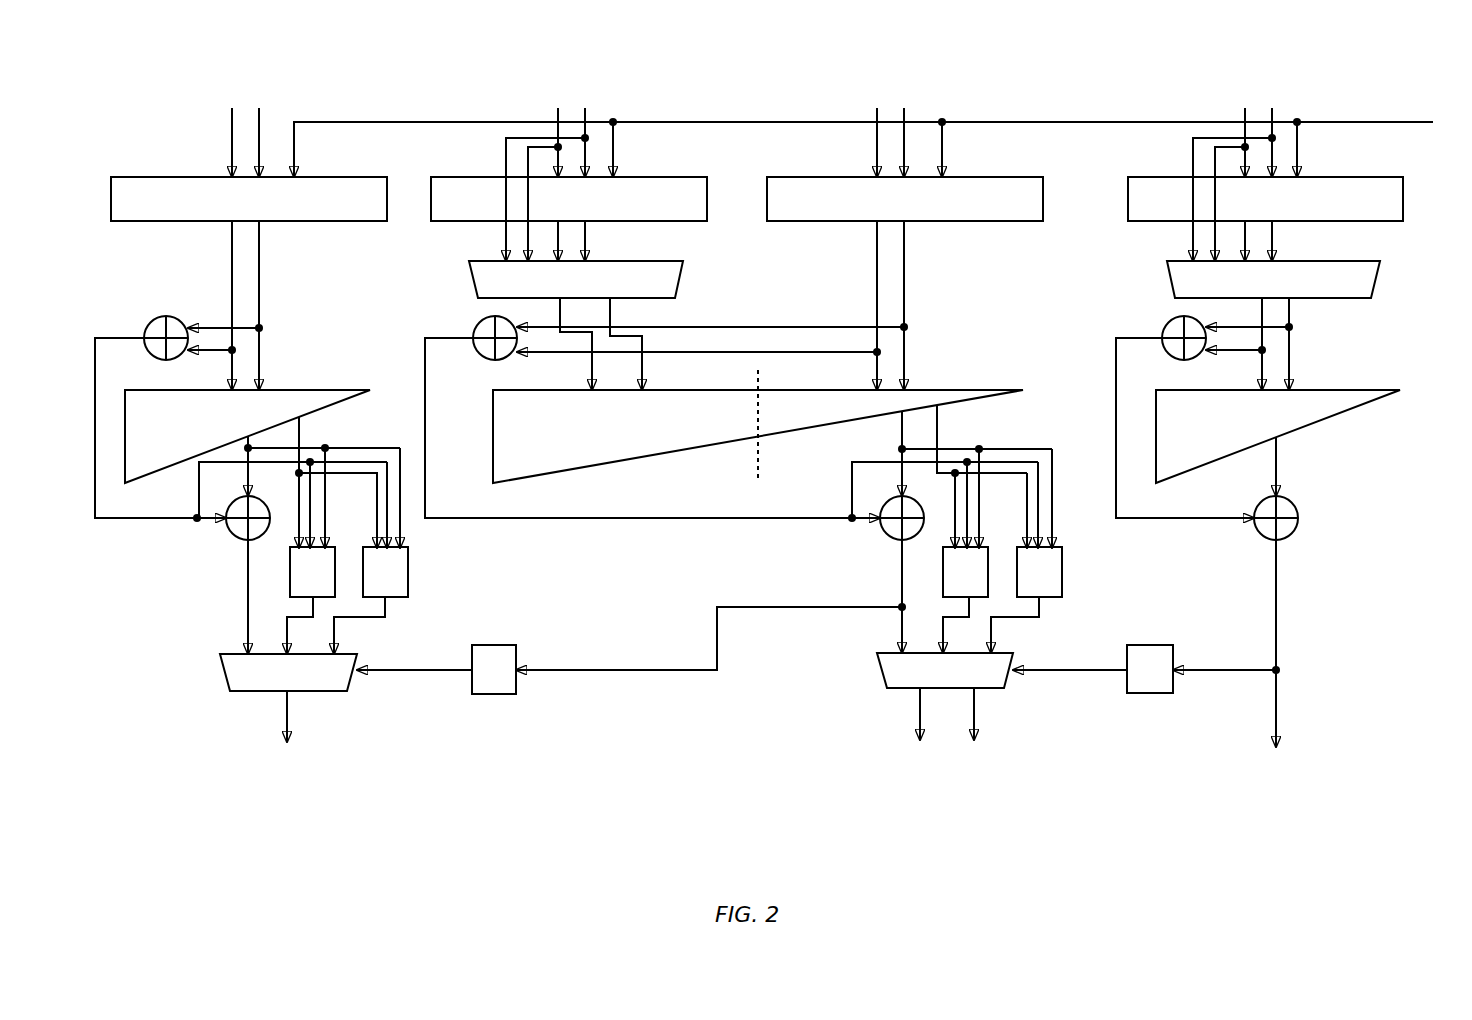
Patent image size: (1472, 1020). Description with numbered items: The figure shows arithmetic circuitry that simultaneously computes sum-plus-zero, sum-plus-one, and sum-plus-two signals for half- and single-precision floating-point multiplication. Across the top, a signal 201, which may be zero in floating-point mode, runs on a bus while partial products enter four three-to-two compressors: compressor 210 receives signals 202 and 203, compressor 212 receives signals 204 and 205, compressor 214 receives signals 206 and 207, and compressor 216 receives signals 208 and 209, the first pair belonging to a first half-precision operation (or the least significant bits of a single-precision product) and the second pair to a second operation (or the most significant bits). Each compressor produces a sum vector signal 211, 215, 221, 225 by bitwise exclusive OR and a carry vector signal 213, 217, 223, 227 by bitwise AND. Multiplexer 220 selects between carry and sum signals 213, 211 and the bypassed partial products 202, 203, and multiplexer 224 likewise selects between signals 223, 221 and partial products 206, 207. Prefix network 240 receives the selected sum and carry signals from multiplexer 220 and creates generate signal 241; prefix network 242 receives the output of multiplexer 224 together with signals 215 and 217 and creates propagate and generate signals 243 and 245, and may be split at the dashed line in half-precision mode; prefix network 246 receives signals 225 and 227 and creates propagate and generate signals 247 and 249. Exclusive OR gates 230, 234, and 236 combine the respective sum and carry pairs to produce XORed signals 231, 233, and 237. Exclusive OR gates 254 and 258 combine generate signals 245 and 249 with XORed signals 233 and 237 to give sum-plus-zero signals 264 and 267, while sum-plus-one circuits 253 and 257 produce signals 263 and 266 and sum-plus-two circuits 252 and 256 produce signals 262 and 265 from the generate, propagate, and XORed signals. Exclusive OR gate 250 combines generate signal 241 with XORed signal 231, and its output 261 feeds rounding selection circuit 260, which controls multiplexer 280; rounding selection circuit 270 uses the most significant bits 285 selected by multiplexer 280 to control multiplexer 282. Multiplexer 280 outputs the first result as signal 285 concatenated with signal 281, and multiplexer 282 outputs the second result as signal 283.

The signal 201 is at (1393, 121).
The partial product signal 202 is at (1272, 120).
The partial product signal 203 is at (1245, 120).
The partial product signal 204 is at (904, 120).
The partial product signal 205 is at (877, 120).
The partial product signal 206 is at (585, 120).
The partial product signal 207 is at (558, 120).
The partial product signal 208 is at (259, 120).
The partial product signal 209 is at (232, 120).
The 3:2 compressor 210 is at (1245, 211).
The 3:2 compressor 212 is at (885, 211).
The 3:2 compressor 214 is at (549, 211).
The 3:2 compressor 216 is at (229, 211).
The sum vector signal 211 is at (1275, 228).
The carry vector signal 213 is at (1245, 238).
The sum vector signal 215 is at (904, 278).
The carry vector signal 217 is at (877, 275).
The multiplexer 220 is at (1253, 291).
The multiplexer 224 is at (556, 291).
The sum vector signal 221 is at (588, 228).
The carry vector signal 223 is at (558, 238).
The sum vector signal 225 is at (259, 278).
The carry vector signal 227 is at (232, 278).
The exclusive OR gate 230 is at (1168, 320).
The exclusive OR gate 234 is at (480, 320).
The exclusive OR gate 236 is at (150, 320).
The XORed signal x_a 231 is at (1178, 522).
The XORed signal 233 is at (643, 520).
The XORed signal 237 is at (143, 522).
The prefix network 240 is at (1233, 434).
The prefix network 242 is at (570, 434).
The prefix network 246 is at (173, 434).
The generate signal g_out 241 is at (1280, 470).
The propagate signal 243 is at (938, 440).
The generate signal 245 is at (902, 425).
The propagate signal 247 is at (299, 440).
The generate signal 249 is at (252, 462).
The exclusive OR gate 250 is at (1295, 532).
The exclusive OR gate 254 is at (882, 535).
The exclusive OR gate 258 is at (230, 535).
The sum-plus-two circuit 252 is at (1059, 584).
The sum-plus-one circuit 253 is at (985, 584).
The sum-plus-two circuit 256 is at (405, 584).
The sum-plus-one circuit 257 is at (332, 584).
The rounding selection circuit 260 is at (1150, 695).
The rounding selection circuit 270 is at (493, 695).
The output line r 261 is at (1278, 645).
The sum-plus-two signal 262 is at (1017, 619).
The sum-plus-one signal 263 is at (733, 633).
The sum-plus-zero signal 264 is at (902, 622).
The sum-plus-two signal 265 is at (362, 620).
The sum-plus-one signal 266 is at (285, 638).
The sum-plus-zero signal 267 is at (245, 620).
The multiplexer 280 is at (925, 682).
The multiplexer 282 is at (268, 684).
The output signal 281 is at (978, 718).
The output signal 283 is at (290, 718).
The output signal 285 is at (918, 718).